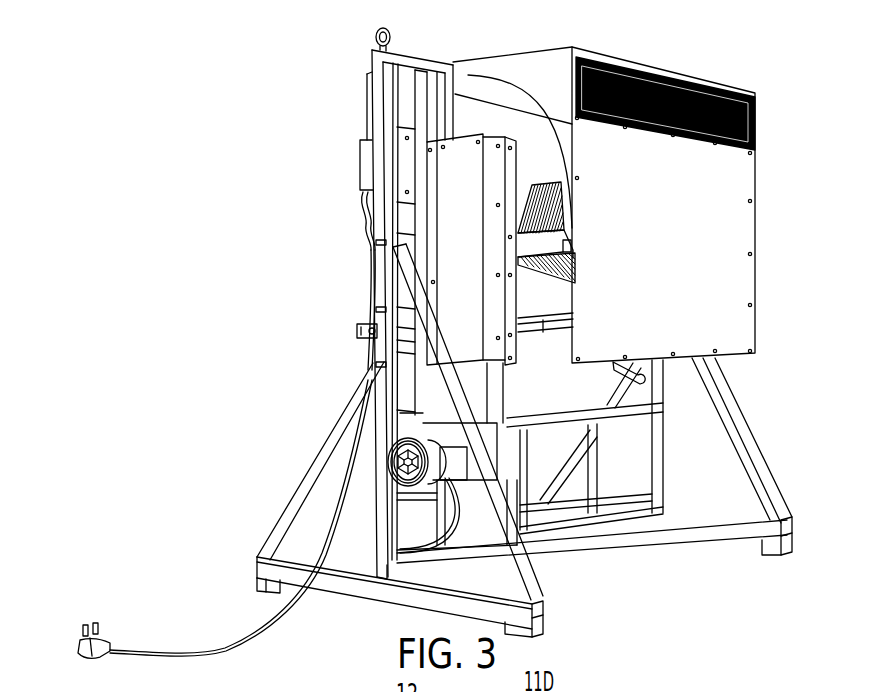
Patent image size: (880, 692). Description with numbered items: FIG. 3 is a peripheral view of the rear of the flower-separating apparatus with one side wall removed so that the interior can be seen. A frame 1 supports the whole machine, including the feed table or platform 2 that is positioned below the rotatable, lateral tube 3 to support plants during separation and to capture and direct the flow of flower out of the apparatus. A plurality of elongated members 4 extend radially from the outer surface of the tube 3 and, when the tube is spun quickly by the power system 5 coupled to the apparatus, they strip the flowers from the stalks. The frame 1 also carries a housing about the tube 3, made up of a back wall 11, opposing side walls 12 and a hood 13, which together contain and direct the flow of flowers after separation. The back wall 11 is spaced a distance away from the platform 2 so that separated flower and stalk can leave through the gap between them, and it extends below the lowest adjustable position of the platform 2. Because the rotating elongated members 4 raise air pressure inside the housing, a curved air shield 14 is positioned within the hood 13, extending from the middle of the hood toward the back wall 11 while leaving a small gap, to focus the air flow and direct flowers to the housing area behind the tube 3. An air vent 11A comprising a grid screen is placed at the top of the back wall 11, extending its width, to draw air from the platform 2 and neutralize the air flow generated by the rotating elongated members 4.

The frame 1 is at (368, 580).
The feed table or platform 2 is at (357, 327).
The rotatable lateral tube 3 is at (545, 237).
The elongated members 4 is at (527, 207).
The power system 5 is at (400, 458).
The back wall 11 is at (743, 218).
The air vent 11A is at (682, 108).
The side wall 12 is at (548, 69).
The hood 13 is at (665, 68).
The curved air shield 14 is at (548, 107).